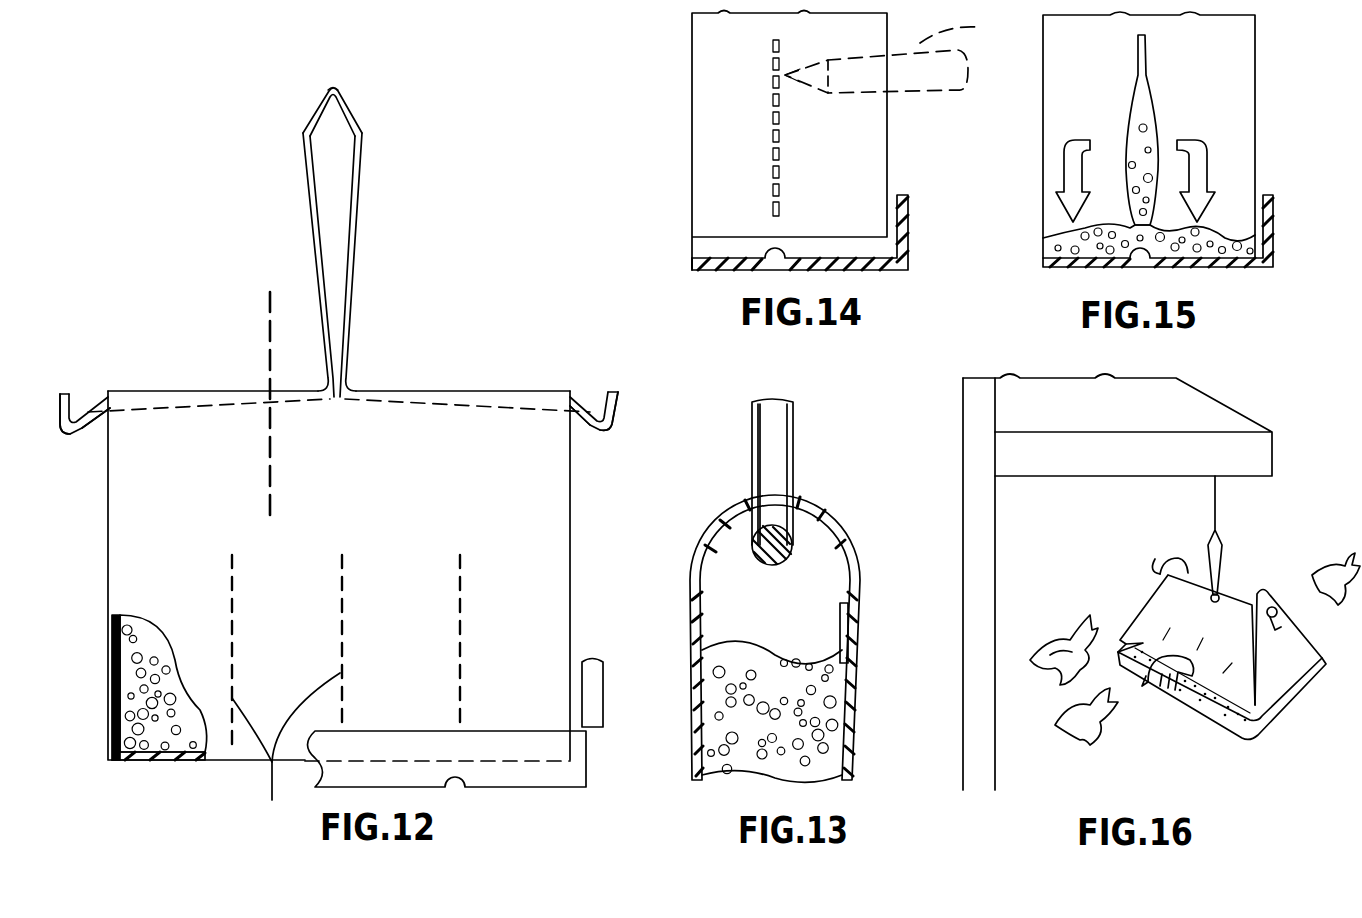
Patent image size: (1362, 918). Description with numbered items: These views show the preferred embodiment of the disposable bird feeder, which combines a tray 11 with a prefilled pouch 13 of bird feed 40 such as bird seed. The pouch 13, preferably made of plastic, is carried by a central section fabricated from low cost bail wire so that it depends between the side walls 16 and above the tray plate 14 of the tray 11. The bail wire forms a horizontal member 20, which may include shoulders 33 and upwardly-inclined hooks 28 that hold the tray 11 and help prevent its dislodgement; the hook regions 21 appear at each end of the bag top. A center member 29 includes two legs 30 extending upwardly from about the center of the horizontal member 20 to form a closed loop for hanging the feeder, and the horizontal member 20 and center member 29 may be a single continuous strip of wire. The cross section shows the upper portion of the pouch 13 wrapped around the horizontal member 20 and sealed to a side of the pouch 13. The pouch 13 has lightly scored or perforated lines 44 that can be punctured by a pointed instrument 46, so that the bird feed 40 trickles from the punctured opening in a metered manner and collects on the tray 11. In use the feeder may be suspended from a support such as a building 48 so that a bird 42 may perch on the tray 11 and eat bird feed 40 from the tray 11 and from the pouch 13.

In FIG. 16, the tray 11 is at (1250, 574).
In FIG. 12, the prefilled pouch 13 is at (266, 302).
In FIG. 14, the prefilled pouch 13 is at (710, 134).
In FIG. 15, the prefilled pouch 13 is at (1064, 106).
In FIG. 13, the prefilled pouch 13 is at (700, 516).
In FIG. 12, the tray plate 14 is at (535, 788).
In FIG. 14, the tray plate 14 is at (908, 245).
In FIG. 15, the tray plate 14 is at (1222, 267).
In FIG. 16, the tray plate 14 is at (1272, 712).
In FIG. 12, the side walls 16 is at (603, 695).
In FIG. 13, the horizontal member 20 is at (793, 552).
In FIG. 12, the hook 21 is at (73, 393).
In FIG. 12, the upwardly-inclined hooks 28 is at (62, 404).
In FIG. 12, the center member 29 is at (342, 84).
In FIG. 12, the legs 30 is at (315, 205).
In FIG. 13, the legs 30 is at (793, 442).
In FIG. 12, the shoulders 33 is at (104, 392).
In FIG. 12, the bird feed 40 is at (130, 718).
In FIG. 15, the bird feed 40 is at (1148, 140).
In FIG. 13, the bird feed 40 is at (813, 682).
In FIG. 16, the bird feed 40 is at (1224, 703).
In FIG. 16, the bird 42 is at (1050, 688).
In FIG. 12, the perforated lines 44 is at (462, 636).
In FIG. 14, the perforated lines 44 is at (780, 145).
In FIG. 15, the perforated lines 44 is at (1145, 70).
In FIG. 14, the pointed instrument 46 is at (903, 60).
In FIG. 16, the building 48 is at (1048, 492).